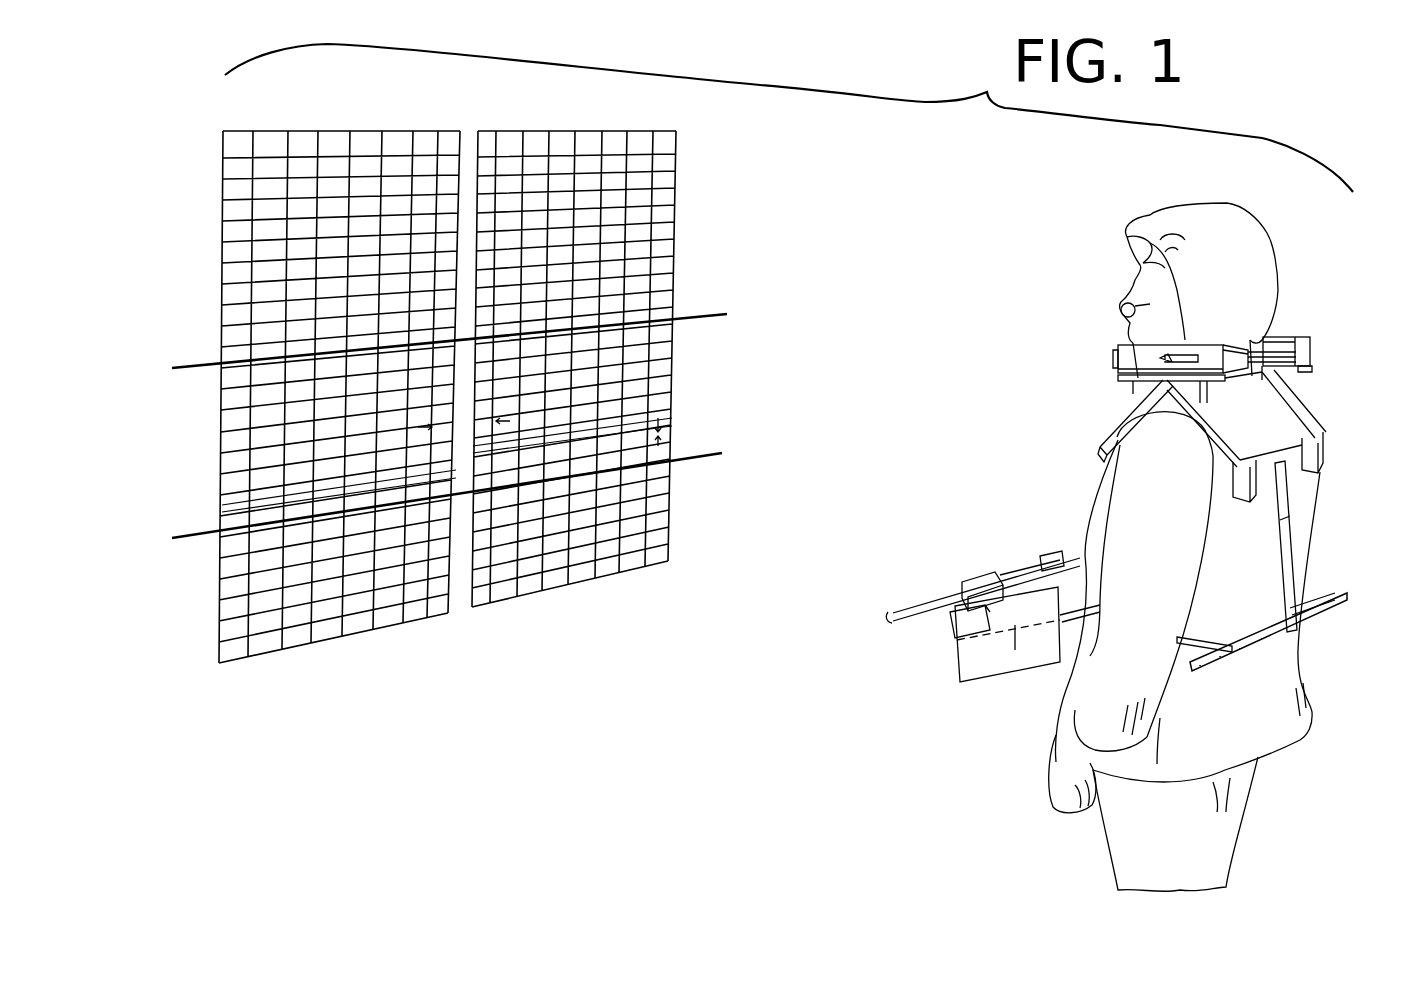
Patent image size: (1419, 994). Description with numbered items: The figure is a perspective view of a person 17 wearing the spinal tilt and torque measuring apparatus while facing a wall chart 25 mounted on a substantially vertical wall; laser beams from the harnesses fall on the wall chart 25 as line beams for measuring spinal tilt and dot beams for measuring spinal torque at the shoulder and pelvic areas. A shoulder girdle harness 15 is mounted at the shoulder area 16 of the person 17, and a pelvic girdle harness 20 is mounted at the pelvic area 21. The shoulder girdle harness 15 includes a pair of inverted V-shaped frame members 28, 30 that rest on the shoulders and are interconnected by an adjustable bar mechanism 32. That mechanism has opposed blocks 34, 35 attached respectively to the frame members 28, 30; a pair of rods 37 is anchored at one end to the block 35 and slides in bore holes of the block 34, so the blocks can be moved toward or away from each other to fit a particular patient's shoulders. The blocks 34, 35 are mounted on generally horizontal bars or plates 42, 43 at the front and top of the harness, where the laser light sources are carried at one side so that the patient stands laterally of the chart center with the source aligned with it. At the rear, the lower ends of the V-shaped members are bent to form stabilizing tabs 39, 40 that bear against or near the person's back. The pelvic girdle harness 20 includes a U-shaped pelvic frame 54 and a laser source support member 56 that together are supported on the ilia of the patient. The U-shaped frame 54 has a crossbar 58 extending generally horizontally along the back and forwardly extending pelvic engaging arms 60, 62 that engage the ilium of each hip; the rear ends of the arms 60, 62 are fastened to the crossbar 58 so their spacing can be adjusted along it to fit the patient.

The shoulder girdle harness 15 is at (1210, 337).
The shoulder area 16 is at (1153, 457).
The person 17 is at (1275, 251).
The pelvic girdle harness 20 is at (1288, 594).
The pelvic area 21 is at (1153, 718).
The wall chart 25 is at (680, 149).
The inverted V-shaped frame member 28 is at (1242, 441).
The inverted V-shaped frame member 30 is at (1310, 419).
The adjustable bar mechanism 32 is at (1198, 352).
The block 34 is at (1243, 340).
The block 35 is at (1308, 342).
The rods 37 is at (1268, 338).
The stabilizing tab 39 is at (1248, 486).
The stabilizing tab 40 is at (1314, 455).
The horizontally extending bar 42 is at (1108, 381).
The horizontally extending bar 43 is at (1313, 355).
The U-shaped pelvic frame 54 is at (1307, 611).
The laser source support member 56 is at (1018, 570).
The crossbar 58 is at (1258, 645).
The pelvic engaging arm 60 is at (1190, 638).
The pelvic engaging arm 62 is at (1306, 595).